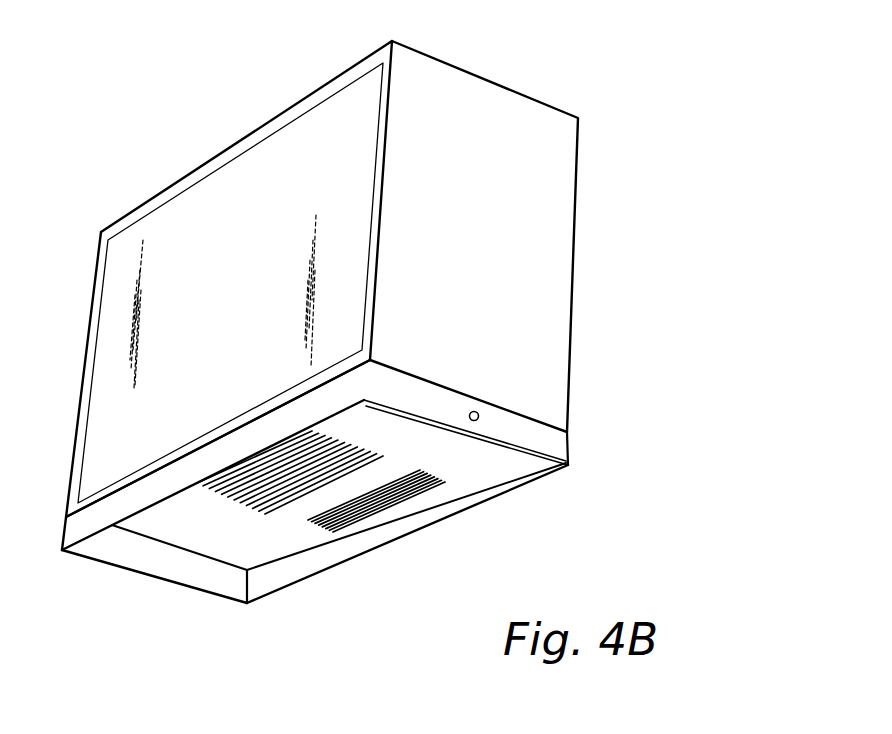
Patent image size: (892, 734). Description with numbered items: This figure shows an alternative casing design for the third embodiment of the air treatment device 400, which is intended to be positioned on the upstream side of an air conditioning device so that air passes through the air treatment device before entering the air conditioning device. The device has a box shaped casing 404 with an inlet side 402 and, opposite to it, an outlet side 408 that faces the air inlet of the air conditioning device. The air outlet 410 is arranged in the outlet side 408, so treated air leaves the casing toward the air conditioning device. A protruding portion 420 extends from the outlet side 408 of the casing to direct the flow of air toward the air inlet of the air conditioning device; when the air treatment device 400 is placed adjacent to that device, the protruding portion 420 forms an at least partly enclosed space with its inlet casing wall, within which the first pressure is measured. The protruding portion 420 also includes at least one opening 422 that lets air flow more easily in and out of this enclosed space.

The air treatment device 400 is at (375, 321).
The inlet side 402 is at (519, 92).
The box shaped casing 404 is at (520, 163).
The outlet side 408 is at (440, 452).
The air outlet 410 is at (347, 515).
The protruding portion 420 is at (542, 437).
The opening 422 is at (474, 411).